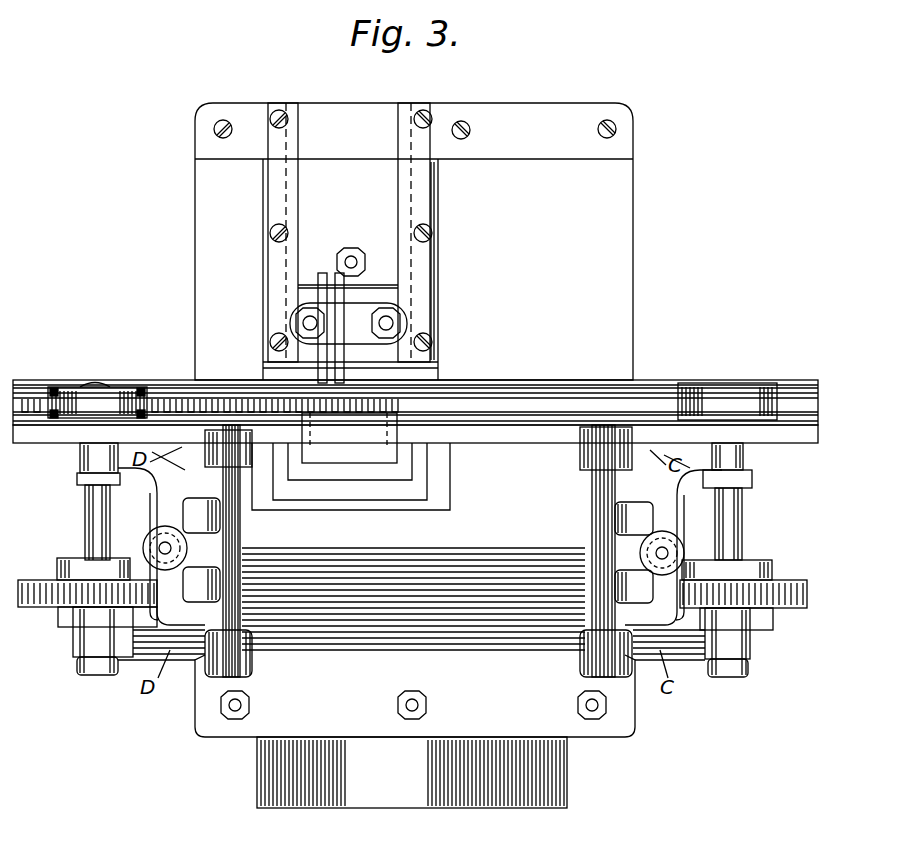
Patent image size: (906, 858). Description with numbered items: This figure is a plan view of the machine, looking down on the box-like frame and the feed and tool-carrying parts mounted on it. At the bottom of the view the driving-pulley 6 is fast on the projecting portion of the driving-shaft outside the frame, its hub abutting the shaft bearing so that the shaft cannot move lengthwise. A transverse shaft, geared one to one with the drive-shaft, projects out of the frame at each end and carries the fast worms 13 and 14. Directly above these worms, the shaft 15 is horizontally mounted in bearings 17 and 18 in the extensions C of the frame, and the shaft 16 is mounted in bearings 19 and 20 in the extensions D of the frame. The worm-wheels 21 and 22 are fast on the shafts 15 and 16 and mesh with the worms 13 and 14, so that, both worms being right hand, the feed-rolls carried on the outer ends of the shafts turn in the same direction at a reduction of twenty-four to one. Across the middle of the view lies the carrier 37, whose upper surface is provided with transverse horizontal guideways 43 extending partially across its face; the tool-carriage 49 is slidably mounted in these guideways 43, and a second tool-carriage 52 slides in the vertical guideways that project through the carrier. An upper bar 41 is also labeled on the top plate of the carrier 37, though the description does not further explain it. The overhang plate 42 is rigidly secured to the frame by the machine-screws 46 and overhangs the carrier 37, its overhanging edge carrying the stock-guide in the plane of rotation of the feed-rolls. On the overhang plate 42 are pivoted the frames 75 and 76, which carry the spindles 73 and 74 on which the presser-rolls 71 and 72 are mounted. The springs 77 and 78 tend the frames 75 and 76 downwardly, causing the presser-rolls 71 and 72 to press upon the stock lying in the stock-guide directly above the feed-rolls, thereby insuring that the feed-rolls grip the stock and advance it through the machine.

The driving-pulley 6 is at (405, 795).
The worm 13 is at (748, 560).
The worm 14 is at (74, 556).
The shaft 15 is at (745, 506).
The shaft 16 is at (88, 511).
The bearing 17 is at (740, 660).
The bearing 18 is at (752, 488).
The bearing 19 is at (80, 658).
The bearing 20 is at (80, 480).
The worm-wheel 21 is at (797, 580).
The worm-wheel 22 is at (27, 580).
The carrier 37 is at (414, 241).
The top bar 41 is at (414, 140).
The overhang plate 42 is at (415, 610).
The transverse horizontal guideways 43 is at (398, 200).
The machine-screws 46 is at (230, 716).
The tool-carriage 49 is at (372, 295).
The tool-carriage 52 is at (351, 461).
The presser-roll 71 is at (772, 384).
The presser-roll 72 is at (125, 395).
The spindle 73 is at (722, 385).
The spindle 74 is at (100, 385).
The frame 75 is at (651, 551).
The frame 76 is at (185, 551).
The spring 77 is at (676, 542).
The spring 78 is at (153, 540).